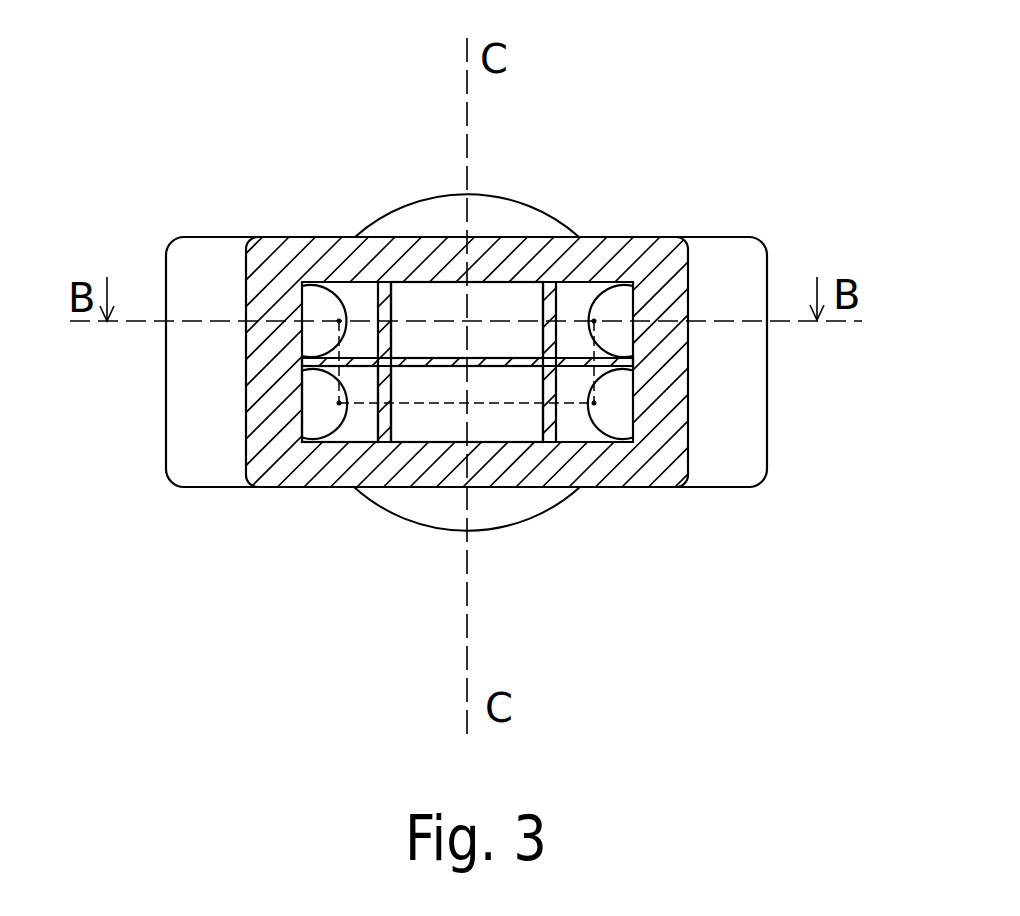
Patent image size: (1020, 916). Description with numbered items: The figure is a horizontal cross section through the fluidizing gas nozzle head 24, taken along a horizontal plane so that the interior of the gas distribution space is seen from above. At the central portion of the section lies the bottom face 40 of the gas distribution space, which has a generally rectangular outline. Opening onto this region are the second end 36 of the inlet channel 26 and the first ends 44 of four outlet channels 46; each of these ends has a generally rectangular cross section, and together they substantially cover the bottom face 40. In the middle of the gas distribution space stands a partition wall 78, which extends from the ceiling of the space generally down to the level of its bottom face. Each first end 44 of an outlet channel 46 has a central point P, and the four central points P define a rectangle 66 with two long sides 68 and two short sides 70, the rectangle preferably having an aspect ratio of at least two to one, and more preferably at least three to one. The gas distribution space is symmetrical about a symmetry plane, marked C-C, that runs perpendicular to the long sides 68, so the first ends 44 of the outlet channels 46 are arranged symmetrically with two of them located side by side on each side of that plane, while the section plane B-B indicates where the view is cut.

The fluidizing gas nozzle head 24 is at (157, 163).
The inlet channel 26 is at (534, 314).
The second end of the inlet channel 36 is at (423, 294).
The bottom face of the gas distribution space 40 is at (518, 442).
The first ends of the outlet channels 44 is at (350, 428).
The outlet channels 46 is at (303, 418).
The rectangle 66 is at (417, 405).
The long sides 68 is at (480, 403).
The short sides 70 is at (593, 399).
The partition wall 78 is at (490, 348).
The central points P is at (340, 321).